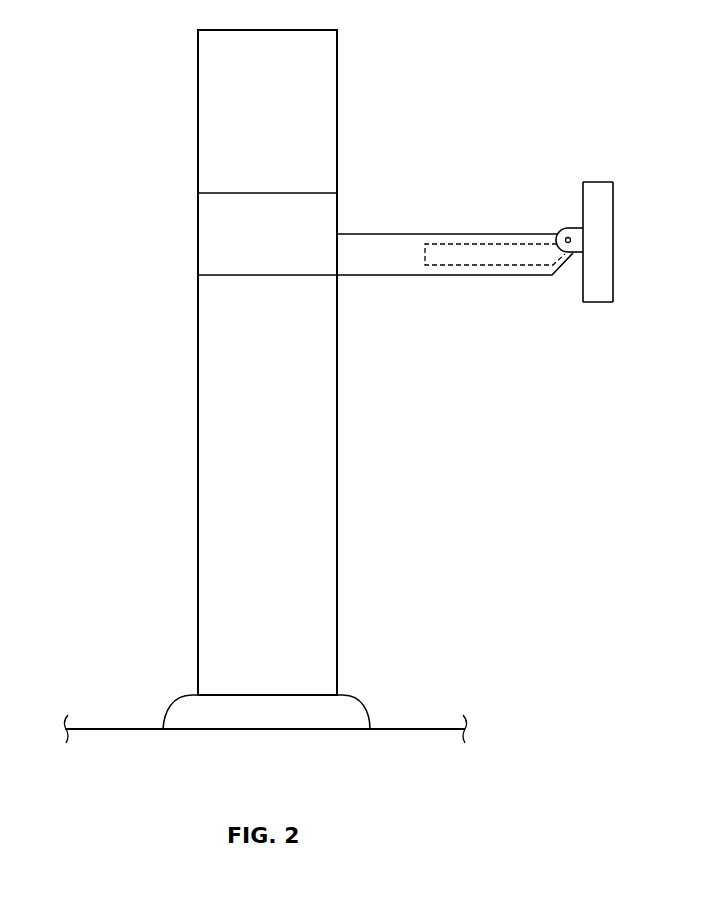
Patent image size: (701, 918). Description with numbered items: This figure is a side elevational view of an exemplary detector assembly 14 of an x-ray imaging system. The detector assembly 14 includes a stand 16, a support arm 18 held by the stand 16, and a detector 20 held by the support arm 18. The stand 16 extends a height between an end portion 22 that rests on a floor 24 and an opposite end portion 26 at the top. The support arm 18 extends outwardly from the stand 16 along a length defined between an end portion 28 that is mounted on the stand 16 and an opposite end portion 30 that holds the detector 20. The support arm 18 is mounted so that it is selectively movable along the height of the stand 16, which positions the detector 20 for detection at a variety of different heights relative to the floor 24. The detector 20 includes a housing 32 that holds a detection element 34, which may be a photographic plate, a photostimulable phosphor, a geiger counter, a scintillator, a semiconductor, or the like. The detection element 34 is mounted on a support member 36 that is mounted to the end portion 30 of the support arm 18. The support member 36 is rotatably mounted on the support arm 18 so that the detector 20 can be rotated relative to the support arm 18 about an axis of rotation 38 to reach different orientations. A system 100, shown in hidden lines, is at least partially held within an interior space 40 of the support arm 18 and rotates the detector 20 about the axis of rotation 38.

The detector assembly 14 is at (403, 117).
The stand 16 is at (200, 543).
The support arm 18 is at (357, 265).
The detector 20 is at (600, 303).
The end portion 22 is at (345, 683).
The floor 24 is at (435, 728).
The end portion 26 is at (160, 97).
The end portion 28 is at (348, 220).
The end portion 30 is at (568, 205).
The housing 32 is at (600, 289).
The detection element 34 is at (598, 245).
The support member 36 is at (578, 257).
The axis of rotation 38 is at (565, 232).
The interior space 40 is at (403, 260).
The system 100 is at (485, 267).